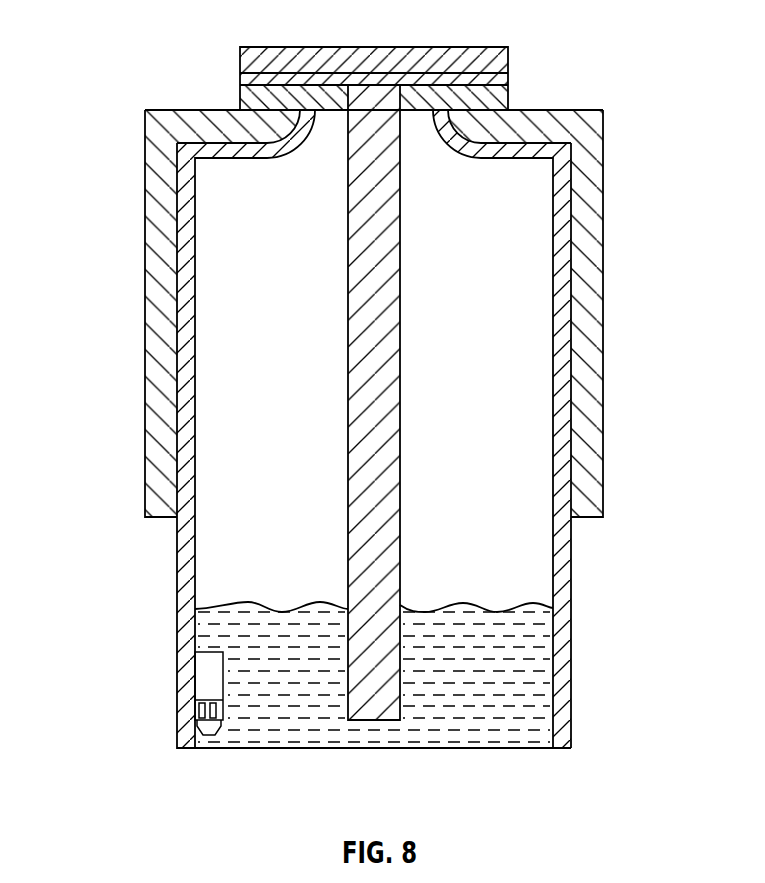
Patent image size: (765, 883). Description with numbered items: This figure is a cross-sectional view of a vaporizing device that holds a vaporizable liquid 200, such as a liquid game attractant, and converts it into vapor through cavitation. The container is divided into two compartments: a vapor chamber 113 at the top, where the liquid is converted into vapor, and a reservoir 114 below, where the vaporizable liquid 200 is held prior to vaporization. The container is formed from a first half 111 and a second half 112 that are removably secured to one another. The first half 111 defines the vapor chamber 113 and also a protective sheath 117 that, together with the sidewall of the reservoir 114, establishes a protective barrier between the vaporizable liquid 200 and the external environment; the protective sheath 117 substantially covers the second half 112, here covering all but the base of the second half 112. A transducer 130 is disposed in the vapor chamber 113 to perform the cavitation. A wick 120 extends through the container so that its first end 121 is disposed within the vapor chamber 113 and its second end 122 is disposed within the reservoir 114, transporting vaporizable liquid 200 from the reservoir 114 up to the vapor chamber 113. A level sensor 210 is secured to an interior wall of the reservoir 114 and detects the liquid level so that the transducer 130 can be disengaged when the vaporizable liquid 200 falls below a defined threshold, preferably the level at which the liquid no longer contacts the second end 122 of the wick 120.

The first half 111 is at (341, 429).
The second half 112 is at (361, 429).
The vapor chamber 113 is at (279, 54).
The reservoir 114 is at (537, 552).
The protective sheath 117 is at (158, 315).
The wick 120 is at (354, 398).
The first end 121 is at (375, 97).
The second end 122 is at (385, 713).
The transducer 130 is at (495, 78).
The vaporizable liquid 200 is at (543, 690).
The level sensor 210 is at (202, 682).